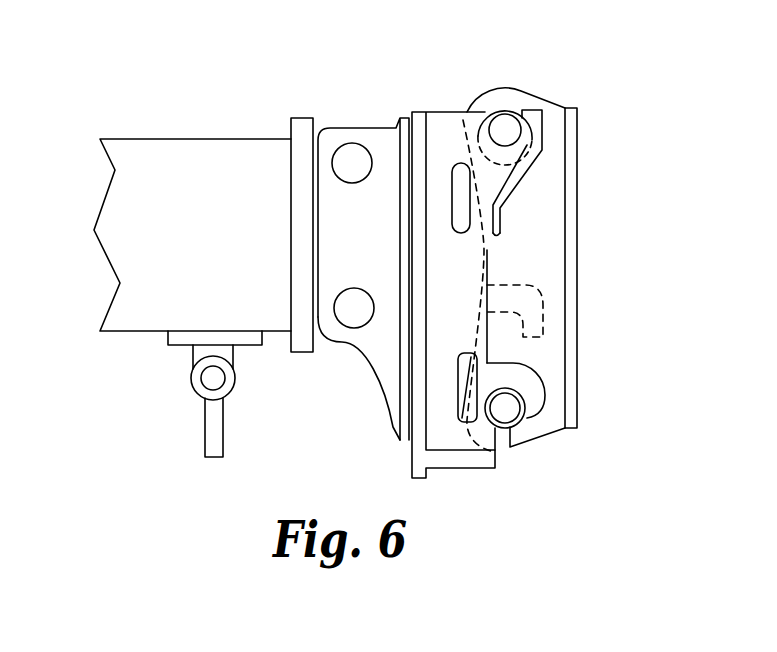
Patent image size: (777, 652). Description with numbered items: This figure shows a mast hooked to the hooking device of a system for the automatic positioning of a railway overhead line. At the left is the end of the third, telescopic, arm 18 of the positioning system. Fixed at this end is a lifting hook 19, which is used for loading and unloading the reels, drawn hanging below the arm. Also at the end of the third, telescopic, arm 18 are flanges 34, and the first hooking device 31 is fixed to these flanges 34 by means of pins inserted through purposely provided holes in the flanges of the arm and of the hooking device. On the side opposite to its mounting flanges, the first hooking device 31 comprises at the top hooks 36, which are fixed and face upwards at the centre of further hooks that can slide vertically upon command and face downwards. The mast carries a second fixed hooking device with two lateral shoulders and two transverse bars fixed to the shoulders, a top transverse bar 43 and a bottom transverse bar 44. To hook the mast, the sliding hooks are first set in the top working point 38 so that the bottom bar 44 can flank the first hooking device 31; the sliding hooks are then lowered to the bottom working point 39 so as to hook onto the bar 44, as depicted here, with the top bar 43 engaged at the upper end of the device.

The third telescopic arm 18 is at (177, 241).
The lifting hook 19 is at (211, 427).
The first hooking device 31 is at (465, 283).
The flanges 34 is at (373, 241).
The hooks 36 is at (537, 151).
The top working point 38 is at (537, 316).
The bottom working point 39 is at (537, 388).
The top transverse bar 43 is at (503, 122).
The bottom transverse bar 44 is at (508, 412).